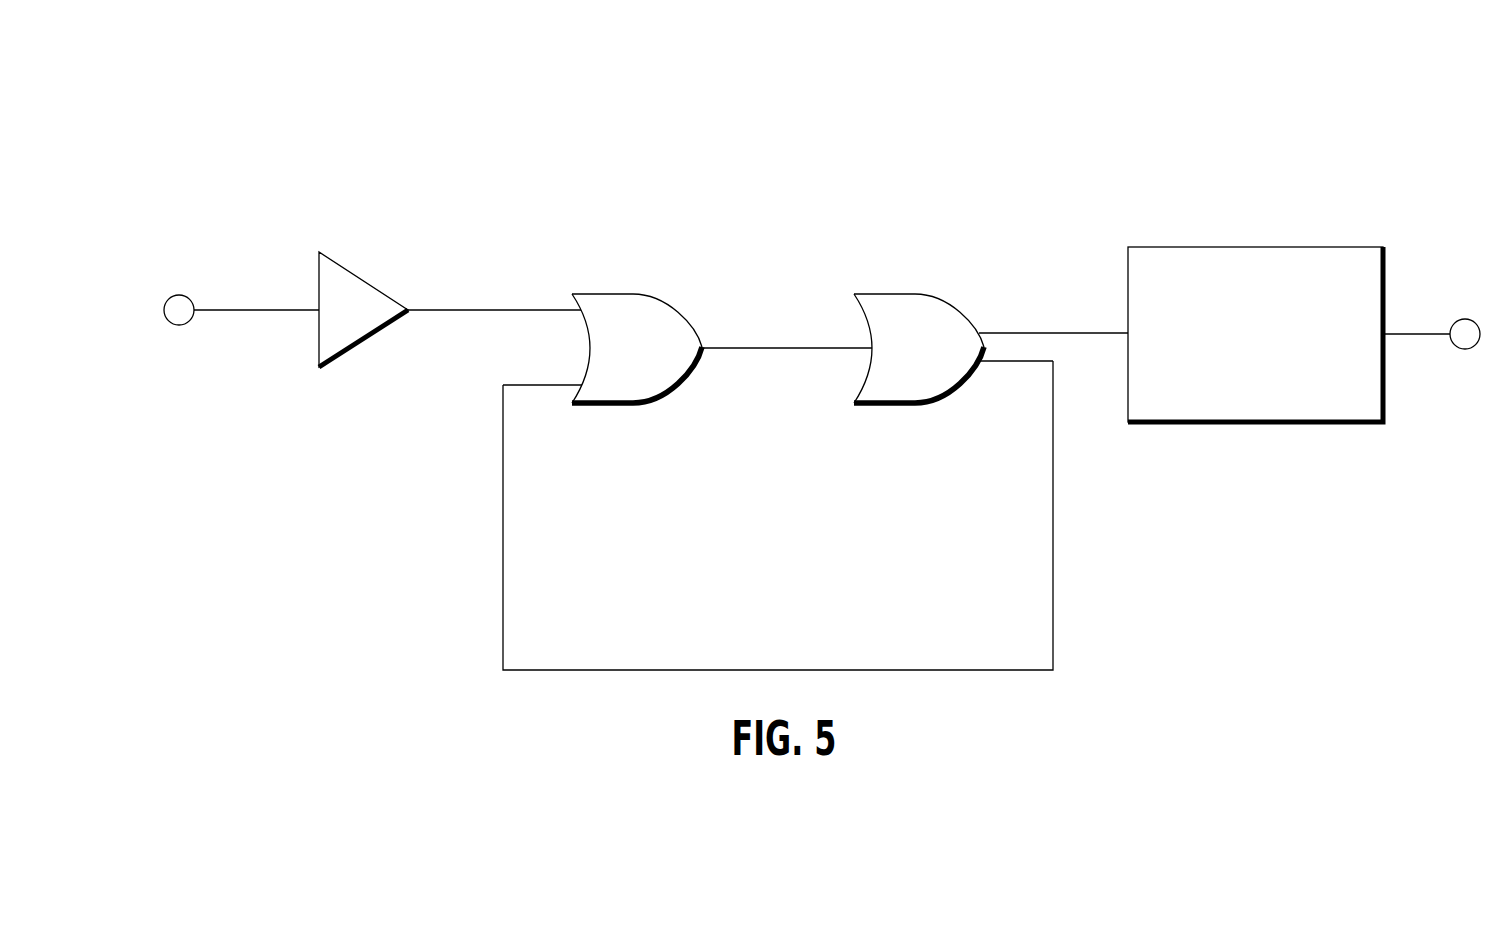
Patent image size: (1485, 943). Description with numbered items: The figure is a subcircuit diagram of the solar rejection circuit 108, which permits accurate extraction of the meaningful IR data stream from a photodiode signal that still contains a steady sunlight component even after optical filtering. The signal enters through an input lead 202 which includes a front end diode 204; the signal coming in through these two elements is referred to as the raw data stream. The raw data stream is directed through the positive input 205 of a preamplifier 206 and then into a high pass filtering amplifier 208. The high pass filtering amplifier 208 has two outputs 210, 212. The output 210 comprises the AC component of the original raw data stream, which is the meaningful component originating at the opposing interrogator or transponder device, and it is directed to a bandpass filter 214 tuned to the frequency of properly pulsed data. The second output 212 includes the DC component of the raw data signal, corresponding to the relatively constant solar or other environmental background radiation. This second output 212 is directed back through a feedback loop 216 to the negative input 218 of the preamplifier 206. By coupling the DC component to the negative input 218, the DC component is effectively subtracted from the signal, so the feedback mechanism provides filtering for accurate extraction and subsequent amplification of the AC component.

The solar rejection circuit 108 is at (789, 136).
The input lead 202 is at (313, 206).
The front end diode 204 is at (365, 277).
The positive input 205 is at (498, 308).
The preamplifier 206 is at (615, 365).
The high pass filtering amplifier 208 is at (897, 365).
The output 210 is at (1052, 333).
The second output 212 is at (1000, 362).
The bandpass filter 214 is at (1255, 247).
The feedback loop 216 is at (778, 670).
The negative input 218 is at (541, 385).